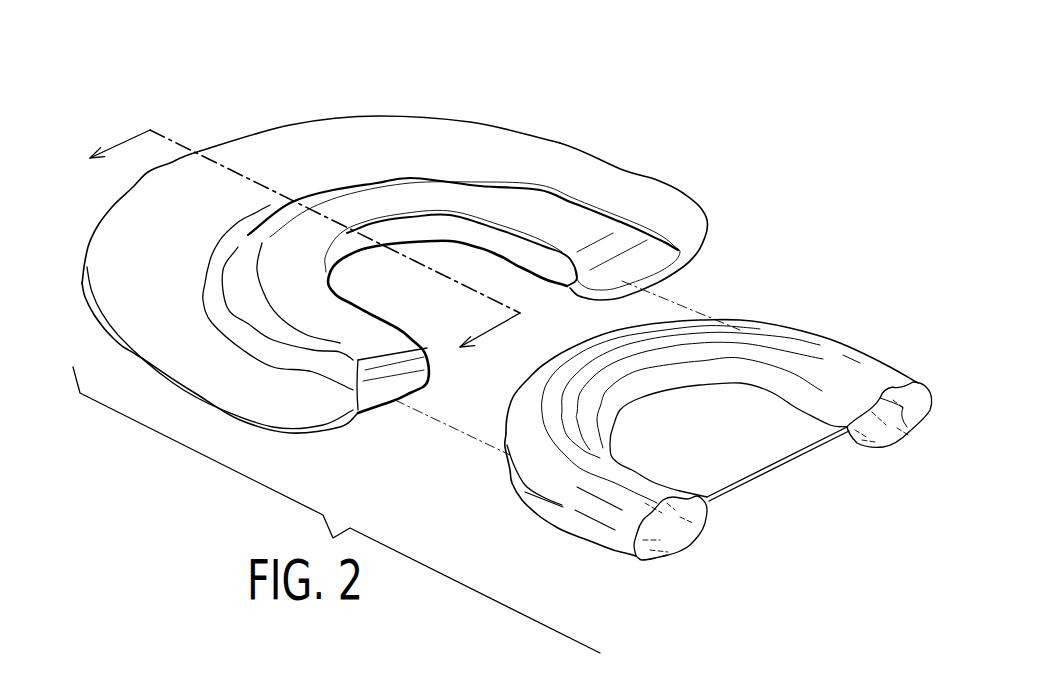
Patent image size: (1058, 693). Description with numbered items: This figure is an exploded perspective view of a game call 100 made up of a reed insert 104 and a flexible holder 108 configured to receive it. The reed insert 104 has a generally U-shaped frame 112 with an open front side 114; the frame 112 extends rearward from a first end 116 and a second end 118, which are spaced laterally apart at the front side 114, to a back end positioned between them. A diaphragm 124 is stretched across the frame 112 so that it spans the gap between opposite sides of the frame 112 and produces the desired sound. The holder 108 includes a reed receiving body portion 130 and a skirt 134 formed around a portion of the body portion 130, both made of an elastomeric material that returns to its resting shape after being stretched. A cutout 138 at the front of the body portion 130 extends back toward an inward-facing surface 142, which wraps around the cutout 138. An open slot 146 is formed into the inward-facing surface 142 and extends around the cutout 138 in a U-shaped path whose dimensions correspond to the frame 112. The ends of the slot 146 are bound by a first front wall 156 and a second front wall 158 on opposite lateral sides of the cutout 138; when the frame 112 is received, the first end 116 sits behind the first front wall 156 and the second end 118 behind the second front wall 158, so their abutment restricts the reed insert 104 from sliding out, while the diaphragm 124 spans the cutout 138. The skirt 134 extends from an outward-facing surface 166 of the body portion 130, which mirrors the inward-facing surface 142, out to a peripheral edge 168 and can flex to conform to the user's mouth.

The game call 100 is at (228, 112).
The reed insert 104 is at (836, 330).
The holder 108 is at (643, 158).
The frame 112 is at (865, 375).
The open front side 114 is at (777, 483).
The first end 116 is at (687, 528).
The second end 118 is at (905, 420).
The diaphragm 124 is at (812, 430).
The reed receiving body portion 130 is at (384, 197).
The skirt 134 is at (667, 200).
The cutout 138 is at (433, 330).
The inward-facing surface 142 is at (540, 247).
The open slot 146 is at (463, 233).
The first front wall 156 is at (373, 387).
The second front wall 158 is at (627, 270).
The outward-facing surface 166 is at (316, 360).
The peripheral edge 168 is at (83, 290).